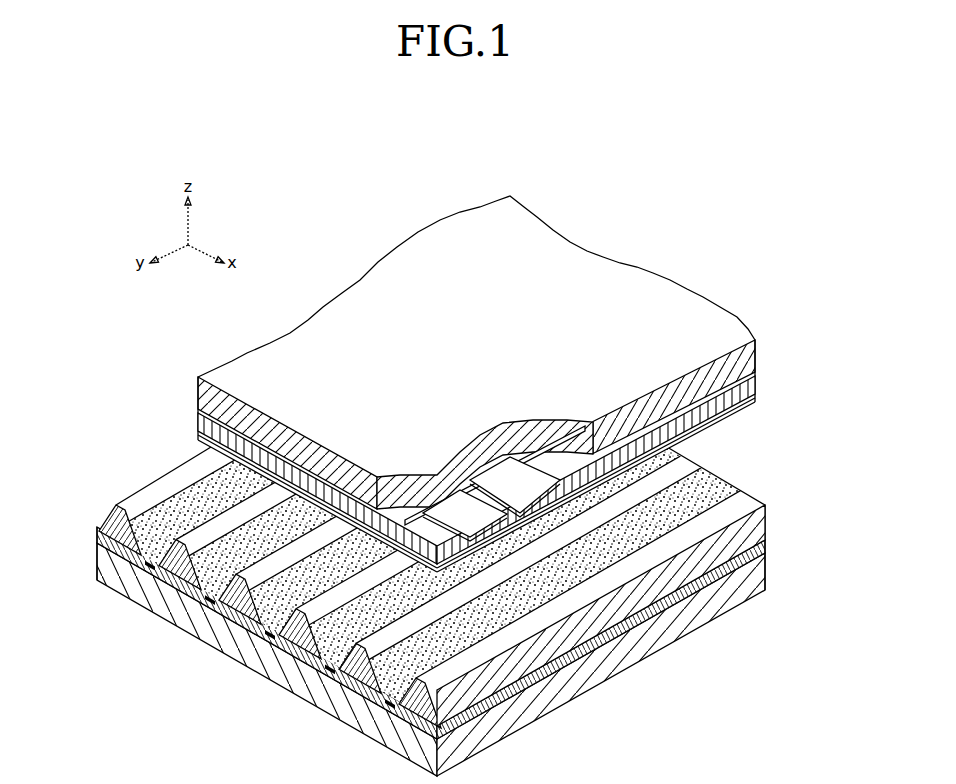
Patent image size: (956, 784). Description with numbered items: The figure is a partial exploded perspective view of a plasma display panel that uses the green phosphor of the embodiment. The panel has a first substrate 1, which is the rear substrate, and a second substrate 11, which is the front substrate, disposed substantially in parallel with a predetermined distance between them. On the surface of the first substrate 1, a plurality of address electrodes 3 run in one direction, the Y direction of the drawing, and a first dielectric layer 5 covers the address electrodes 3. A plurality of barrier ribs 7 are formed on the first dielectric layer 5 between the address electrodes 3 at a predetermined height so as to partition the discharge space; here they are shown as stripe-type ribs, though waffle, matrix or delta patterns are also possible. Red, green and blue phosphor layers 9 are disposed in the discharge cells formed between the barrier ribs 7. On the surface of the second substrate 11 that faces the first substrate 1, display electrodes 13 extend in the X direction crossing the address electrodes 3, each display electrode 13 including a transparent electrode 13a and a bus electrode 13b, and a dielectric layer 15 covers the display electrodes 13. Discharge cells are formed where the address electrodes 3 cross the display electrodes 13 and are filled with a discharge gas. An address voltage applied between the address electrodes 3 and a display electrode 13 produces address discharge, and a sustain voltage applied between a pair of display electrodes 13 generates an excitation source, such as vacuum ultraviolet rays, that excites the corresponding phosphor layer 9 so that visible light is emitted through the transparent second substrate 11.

The first substrate 1 is at (393, 738).
The address electrodes 3 is at (152, 573).
The first dielectric layer 5 is at (105, 537).
The barrier ribs 7 is at (227, 617).
The phosphor layers 9 is at (172, 503).
The second substrate 11 is at (605, 277).
The display electrodes 13 is at (479, 445).
The transparent electrode 13a is at (458, 494).
The bus electrode 13b is at (425, 515).
The dielectric layer 15 is at (758, 381).